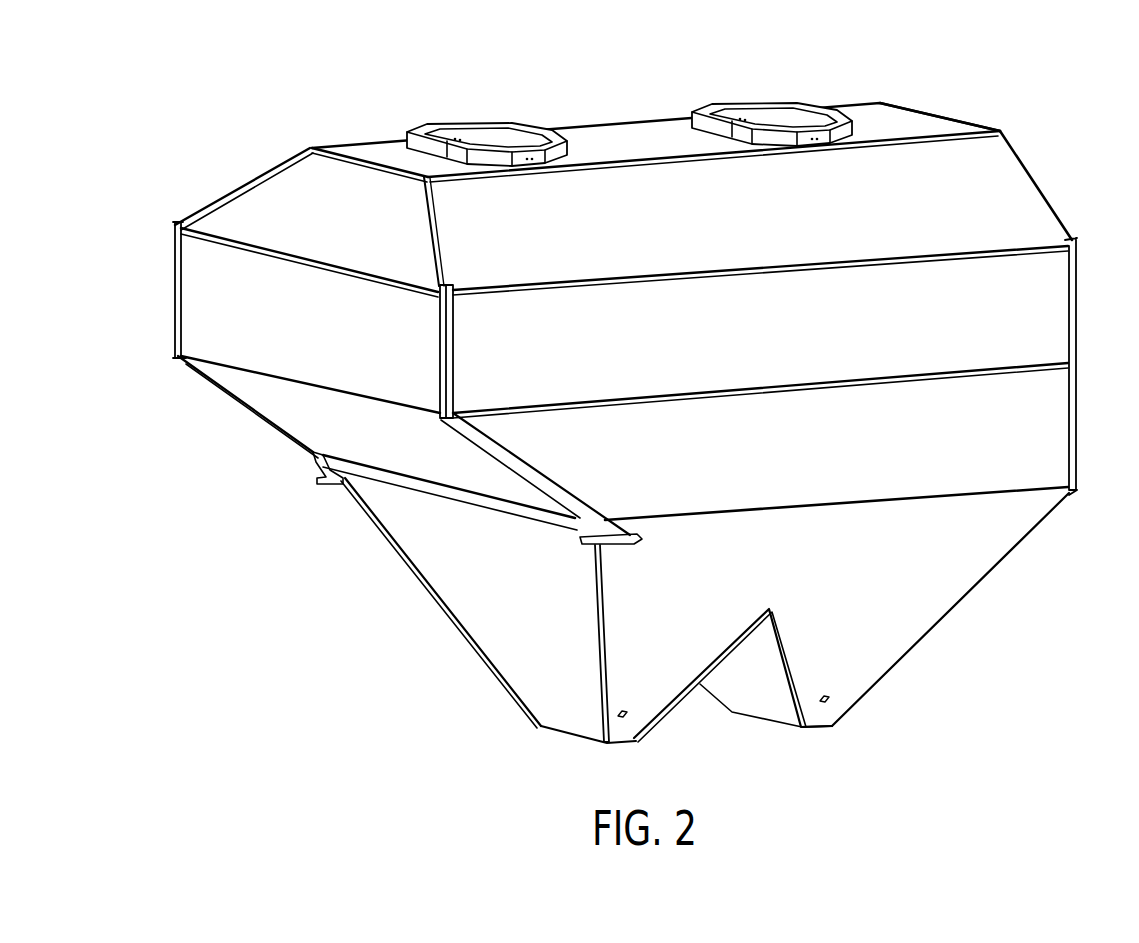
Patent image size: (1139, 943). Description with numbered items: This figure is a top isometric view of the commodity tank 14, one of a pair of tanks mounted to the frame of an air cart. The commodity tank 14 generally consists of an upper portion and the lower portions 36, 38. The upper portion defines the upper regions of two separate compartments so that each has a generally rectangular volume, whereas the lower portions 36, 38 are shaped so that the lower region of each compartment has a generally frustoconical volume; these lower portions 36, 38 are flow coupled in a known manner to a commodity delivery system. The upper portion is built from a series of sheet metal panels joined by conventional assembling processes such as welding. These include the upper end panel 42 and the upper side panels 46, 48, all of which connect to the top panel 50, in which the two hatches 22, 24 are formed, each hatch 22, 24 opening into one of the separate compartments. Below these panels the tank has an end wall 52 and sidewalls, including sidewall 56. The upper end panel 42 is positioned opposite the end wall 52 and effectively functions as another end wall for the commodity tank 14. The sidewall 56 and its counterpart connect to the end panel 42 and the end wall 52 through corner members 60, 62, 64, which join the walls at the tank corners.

The commodity tank 14 is at (235, 143).
The hatch 22 is at (762, 107).
The hatch 24 is at (478, 128).
The lower portion 36 is at (913, 623).
The lower portion 38 is at (662, 690).
The upper end panel 42 is at (247, 201).
The upper side panel 46 is at (295, 157).
The upper side panel 48 is at (630, 187).
The top panel 50 is at (922, 120).
The end wall 52 is at (193, 297).
The sidewall 56 is at (1058, 317).
The corner member 60 is at (1075, 278).
The corner member 62 is at (443, 317).
The corner member 64 is at (172, 260).